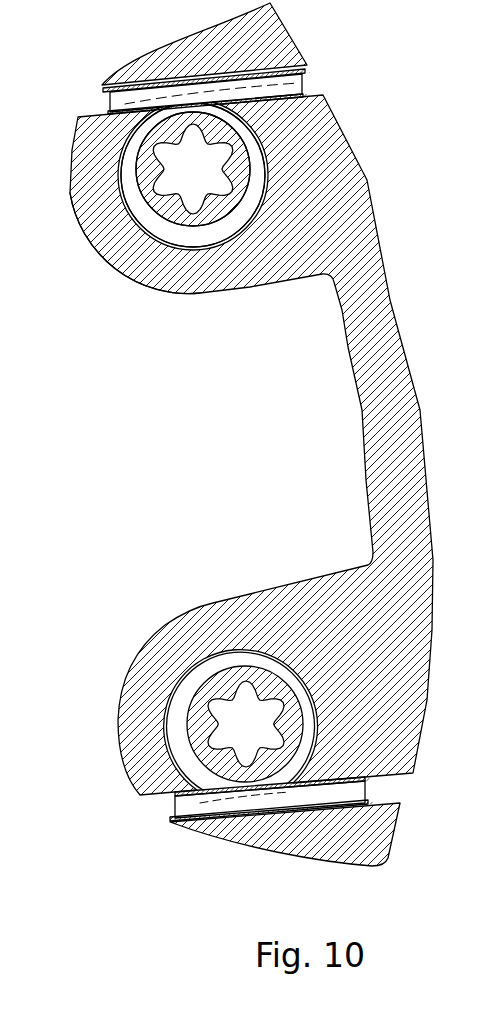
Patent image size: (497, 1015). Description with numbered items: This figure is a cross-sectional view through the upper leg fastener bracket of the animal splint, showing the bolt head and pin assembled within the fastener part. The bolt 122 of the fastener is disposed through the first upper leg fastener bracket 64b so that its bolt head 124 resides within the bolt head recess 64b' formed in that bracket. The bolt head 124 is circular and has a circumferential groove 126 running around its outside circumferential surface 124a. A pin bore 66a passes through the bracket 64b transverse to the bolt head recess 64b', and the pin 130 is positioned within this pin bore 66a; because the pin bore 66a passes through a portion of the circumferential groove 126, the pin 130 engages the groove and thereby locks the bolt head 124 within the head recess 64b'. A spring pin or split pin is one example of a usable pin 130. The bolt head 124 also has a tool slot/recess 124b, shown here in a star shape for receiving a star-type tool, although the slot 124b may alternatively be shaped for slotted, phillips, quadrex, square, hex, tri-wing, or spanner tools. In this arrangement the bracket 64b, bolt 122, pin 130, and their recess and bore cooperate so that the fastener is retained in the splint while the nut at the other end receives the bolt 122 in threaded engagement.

The pin bore 66a is at (100, 102).
The pin 130 is at (302, 80).
The circumferential groove 126 is at (248, 143).
The bolt 122 is at (255, 178).
The bolt head 124 is at (218, 210).
The circumferential surface 124a is at (118, 182).
The tool slot/recess 124b is at (185, 178).
The first upper leg fastener bracket 64b is at (248, 507).
The bolt head recess 64b' is at (122, 243).